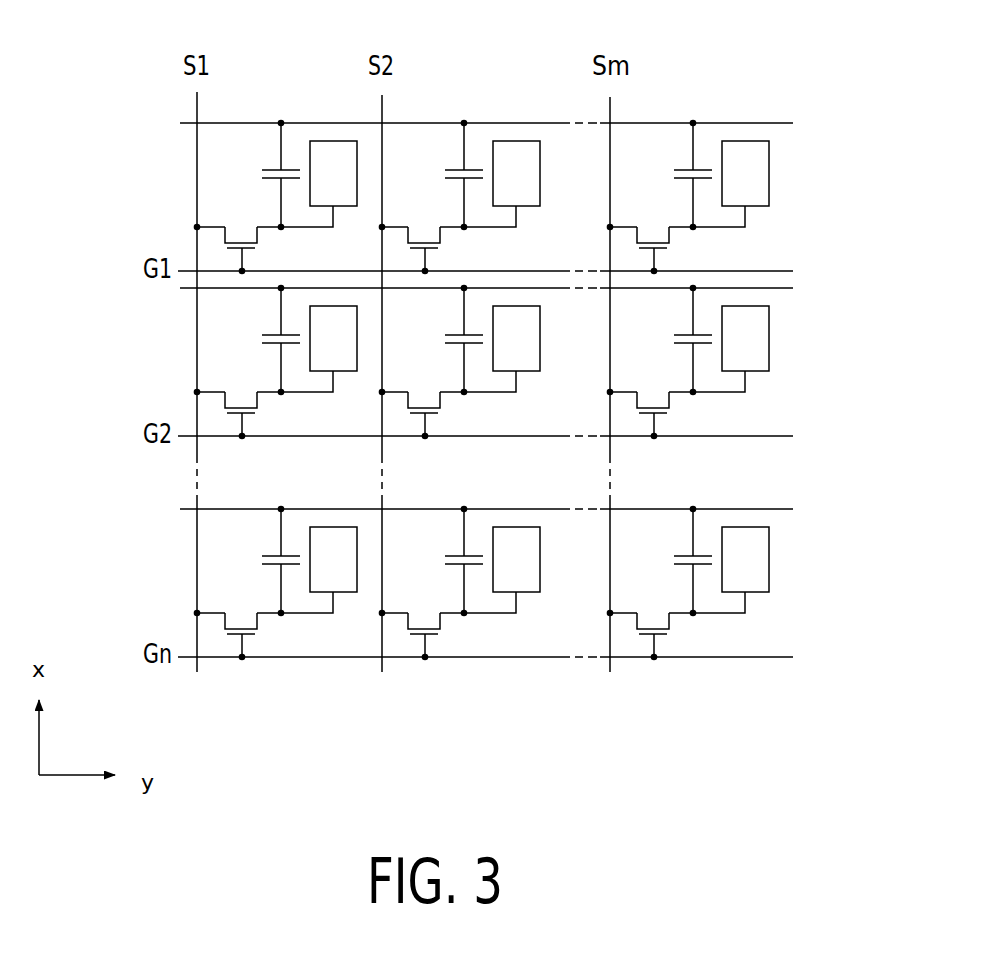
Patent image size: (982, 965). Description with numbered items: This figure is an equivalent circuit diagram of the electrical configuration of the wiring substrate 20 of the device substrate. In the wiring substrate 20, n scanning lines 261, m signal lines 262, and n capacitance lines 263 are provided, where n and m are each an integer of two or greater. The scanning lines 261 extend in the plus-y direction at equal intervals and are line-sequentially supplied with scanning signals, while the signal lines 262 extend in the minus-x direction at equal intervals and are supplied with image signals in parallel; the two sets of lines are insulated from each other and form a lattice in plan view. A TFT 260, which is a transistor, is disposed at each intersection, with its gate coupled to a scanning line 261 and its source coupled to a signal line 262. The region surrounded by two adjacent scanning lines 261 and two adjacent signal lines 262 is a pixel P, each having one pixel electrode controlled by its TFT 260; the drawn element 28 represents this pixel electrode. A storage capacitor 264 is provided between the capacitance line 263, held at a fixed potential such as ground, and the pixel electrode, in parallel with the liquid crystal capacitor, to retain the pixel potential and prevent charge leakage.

The wiring substrate 20 is at (792, 84).
The light emitting element 28 is at (333, 141).
The TFT 260 is at (272, 251).
The scanning line 261 is at (190, 270).
The signal line 262 is at (198, 113).
The capacitance line 263 is at (180, 123).
The storage capacitor 264 is at (253, 173).
The pixel P is at (210, 179).